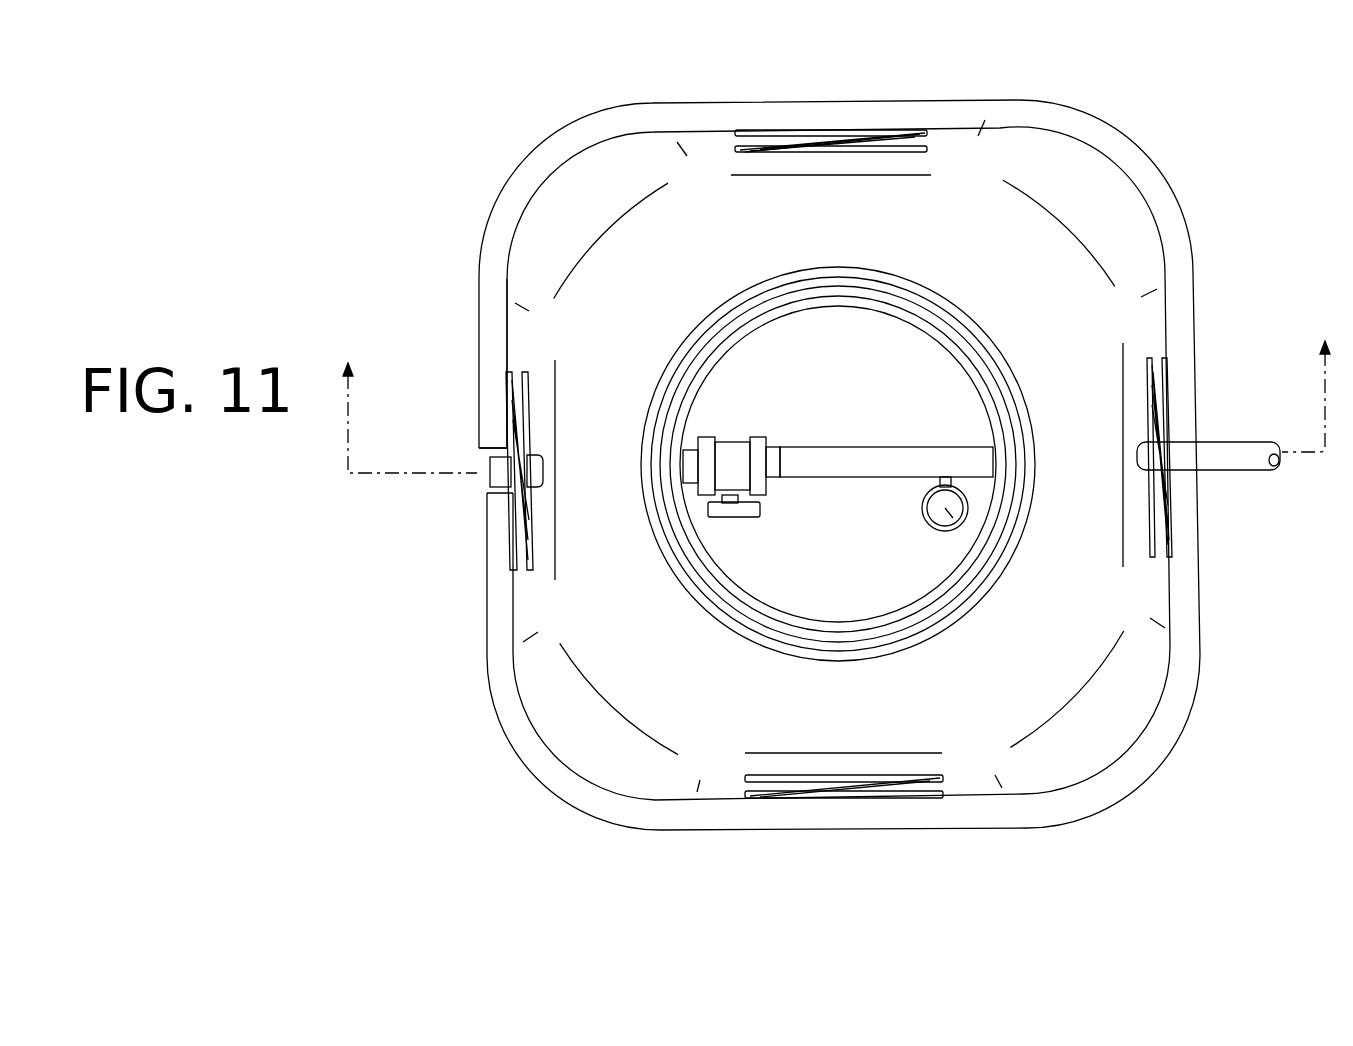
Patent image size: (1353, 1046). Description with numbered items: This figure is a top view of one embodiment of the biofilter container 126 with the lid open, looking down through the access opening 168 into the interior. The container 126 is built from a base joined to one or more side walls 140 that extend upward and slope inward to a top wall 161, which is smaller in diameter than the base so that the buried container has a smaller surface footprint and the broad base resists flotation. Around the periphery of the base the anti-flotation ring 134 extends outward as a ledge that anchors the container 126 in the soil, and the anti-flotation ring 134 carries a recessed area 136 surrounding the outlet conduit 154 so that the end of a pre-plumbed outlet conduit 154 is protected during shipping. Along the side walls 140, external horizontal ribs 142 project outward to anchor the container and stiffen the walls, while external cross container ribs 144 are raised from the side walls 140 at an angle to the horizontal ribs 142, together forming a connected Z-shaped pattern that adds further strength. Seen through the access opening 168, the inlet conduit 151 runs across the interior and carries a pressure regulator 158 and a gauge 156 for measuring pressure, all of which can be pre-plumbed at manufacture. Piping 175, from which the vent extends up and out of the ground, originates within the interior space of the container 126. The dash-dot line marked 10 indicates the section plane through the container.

The section line 10- 10 is at (836, 394).
The biofilter container 126 is at (432, 200).
The anti-flotation ring 134 is at (585, 793).
The recessed area 136 is at (488, 453).
The side wall 140 is at (1163, 585).
The external horizontal rib 142 is at (748, 130).
The external cross container rib 144 is at (846, 128).
The inlet conduit 151 is at (530, 457).
The outlet conduit 154 is at (490, 480).
The gauge 156 is at (920, 513).
The pressure regulator 158 is at (705, 460).
The top wall 161 is at (585, 303).
The access opening 168 is at (892, 368).
The piping 175 is at (1233, 463).